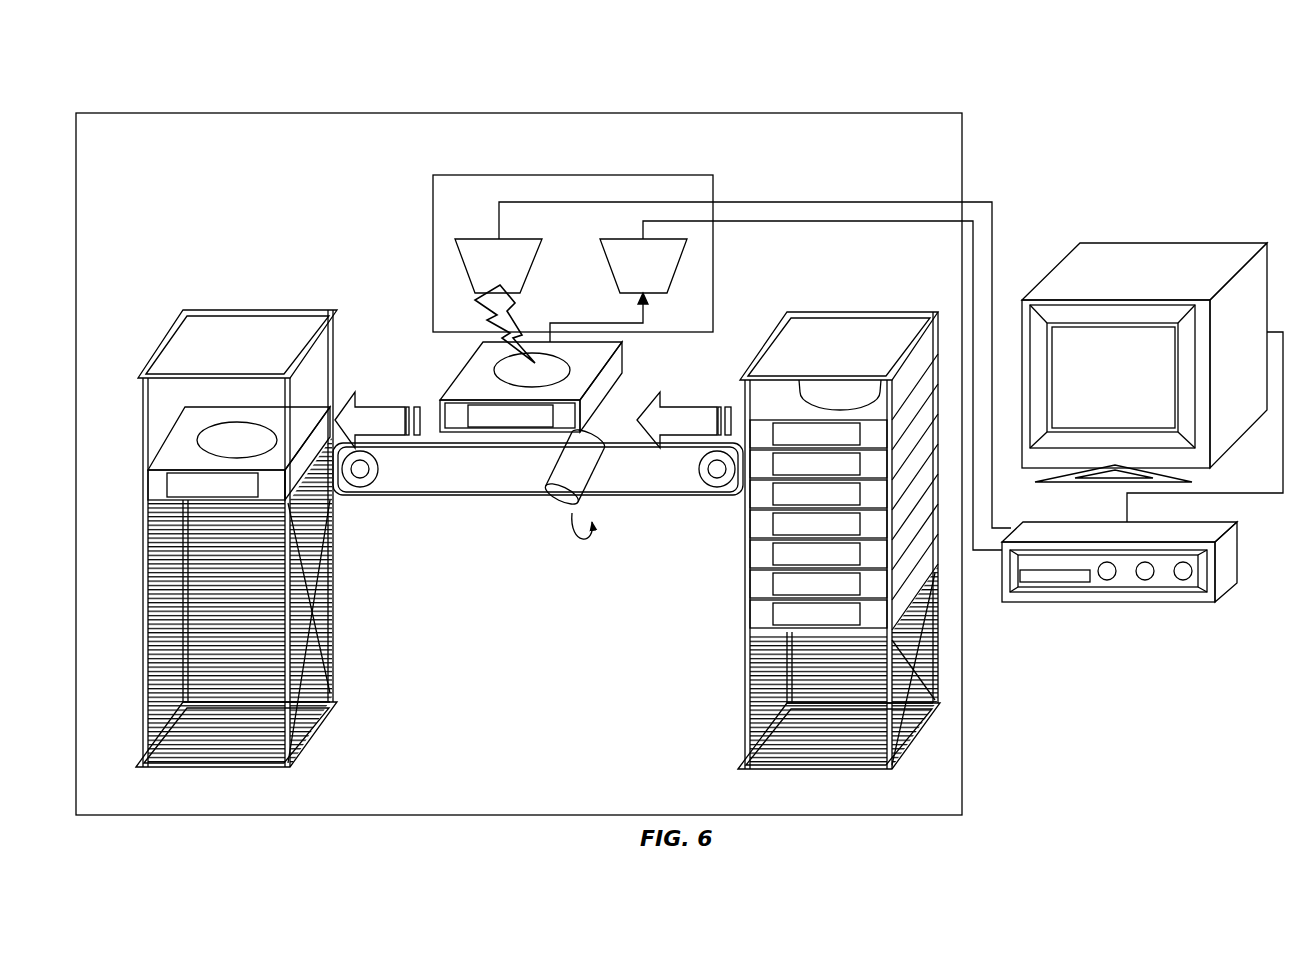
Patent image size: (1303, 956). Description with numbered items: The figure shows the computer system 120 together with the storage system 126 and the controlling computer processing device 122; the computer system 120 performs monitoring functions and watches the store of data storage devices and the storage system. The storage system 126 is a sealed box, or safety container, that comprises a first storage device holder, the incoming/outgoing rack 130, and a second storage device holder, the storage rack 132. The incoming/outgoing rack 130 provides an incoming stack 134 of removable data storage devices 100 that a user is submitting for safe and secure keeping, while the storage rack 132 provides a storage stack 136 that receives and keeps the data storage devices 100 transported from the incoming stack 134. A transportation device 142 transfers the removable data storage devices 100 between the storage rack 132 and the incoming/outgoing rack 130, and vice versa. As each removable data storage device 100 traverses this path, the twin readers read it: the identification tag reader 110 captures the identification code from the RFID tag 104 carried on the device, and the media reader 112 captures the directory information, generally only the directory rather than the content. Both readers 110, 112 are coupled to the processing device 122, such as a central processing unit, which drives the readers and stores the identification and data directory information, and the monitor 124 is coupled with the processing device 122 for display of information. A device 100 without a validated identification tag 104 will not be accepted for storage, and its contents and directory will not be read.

The removable data storage device 100 is at (513, 387).
The RFID tag 104 is at (550, 364).
The identification tag reader 110 is at (512, 238).
The media reader 112 is at (632, 238).
The computer system 120 is at (1031, 84).
The processing device 122 is at (1187, 603).
The monitor 124 is at (1177, 243).
The storage system 126 is at (526, 108).
The incoming/outgoing rack 130 is at (212, 520).
The storage rack 132 is at (871, 523).
The incoming stack 134 is at (143, 530).
The storage stack 136 is at (905, 505).
The transportation device 142 is at (463, 521).